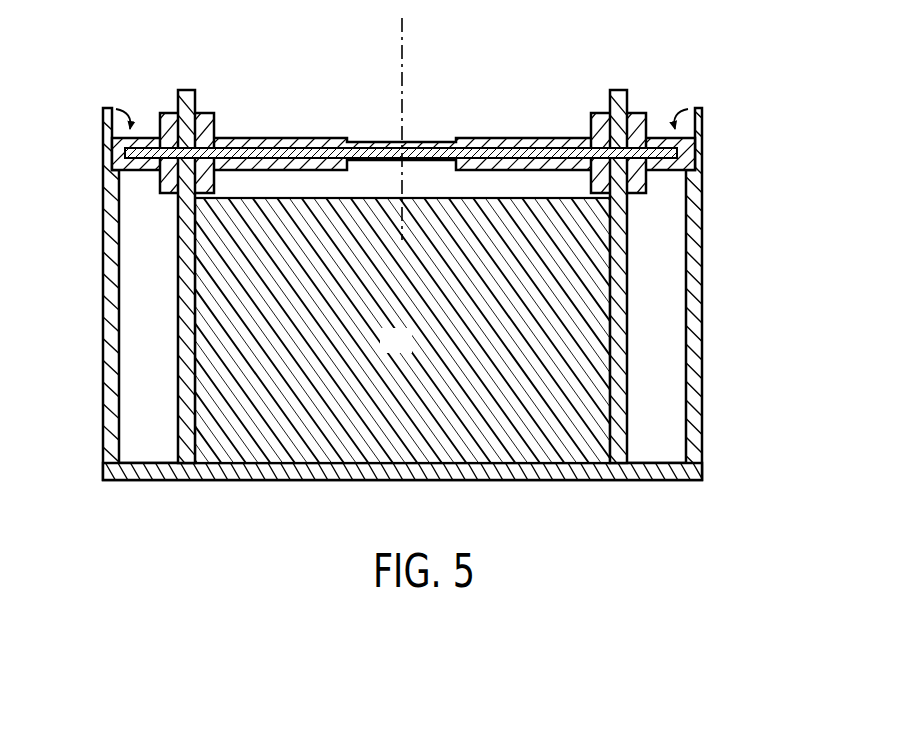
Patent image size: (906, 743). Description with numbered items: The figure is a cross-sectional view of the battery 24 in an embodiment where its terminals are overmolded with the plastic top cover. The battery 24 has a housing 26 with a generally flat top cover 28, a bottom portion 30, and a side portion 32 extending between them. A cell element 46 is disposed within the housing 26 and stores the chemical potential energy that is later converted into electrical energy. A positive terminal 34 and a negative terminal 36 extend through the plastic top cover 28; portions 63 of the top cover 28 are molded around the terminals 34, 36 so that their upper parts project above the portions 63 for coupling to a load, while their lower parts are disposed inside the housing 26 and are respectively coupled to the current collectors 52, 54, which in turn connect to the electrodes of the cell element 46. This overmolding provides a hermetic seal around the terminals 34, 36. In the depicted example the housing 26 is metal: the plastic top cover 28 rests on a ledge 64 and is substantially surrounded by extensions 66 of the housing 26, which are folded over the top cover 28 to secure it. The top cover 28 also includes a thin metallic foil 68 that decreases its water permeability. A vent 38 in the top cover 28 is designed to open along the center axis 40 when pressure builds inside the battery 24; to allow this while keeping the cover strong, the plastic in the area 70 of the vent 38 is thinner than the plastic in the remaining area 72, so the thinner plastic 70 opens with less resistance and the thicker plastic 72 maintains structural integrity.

The battery 24 is at (586, 22).
The housing 26 is at (702, 243).
The top cover 28 is at (566, 138).
The bottom portion 30 is at (540, 481).
The side portion 32 is at (702, 410).
The positive terminal 34 is at (187, 90).
The negative terminal 36 is at (612, 90).
The vent 38 is at (425, 140).
The axis 40 is at (400, 50).
The cell element 46 is at (407, 351).
The positive current collector 52 is at (178, 387).
The negative current collector 54 is at (622, 333).
The portions of the top cover 63 is at (207, 113).
The ledge 64 is at (105, 187).
The extensions 66 is at (110, 108).
The metallic foil 68 is at (520, 153).
The thinner plastic area of the vent 70 is at (370, 142).
The thicker plastic remaining area 72 is at (290, 138).